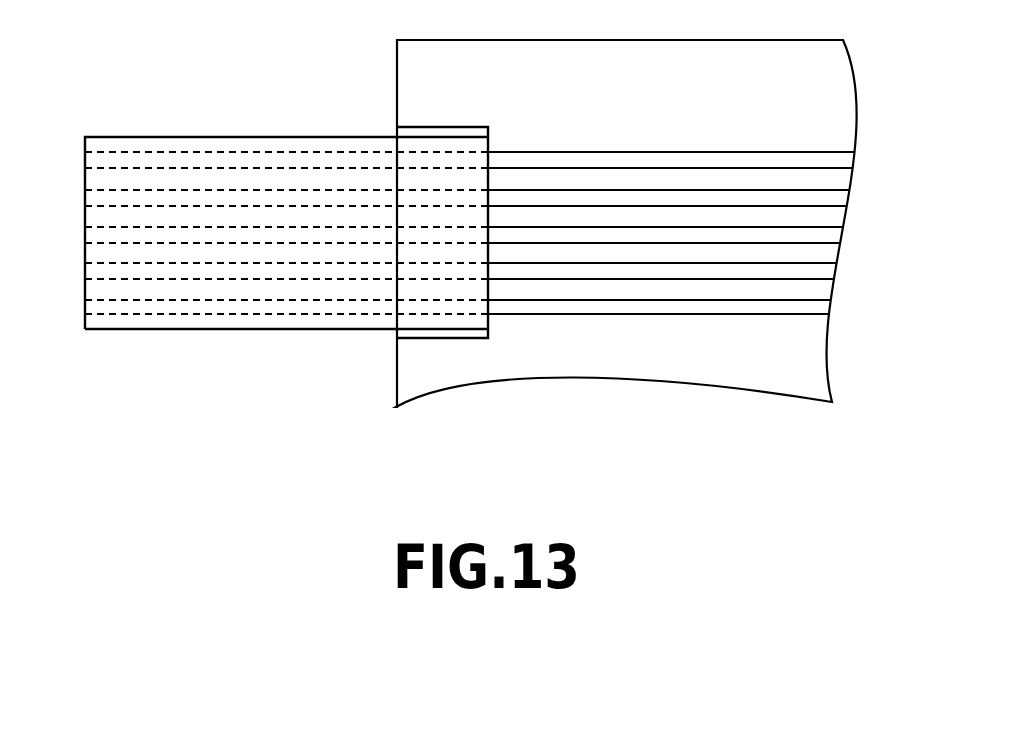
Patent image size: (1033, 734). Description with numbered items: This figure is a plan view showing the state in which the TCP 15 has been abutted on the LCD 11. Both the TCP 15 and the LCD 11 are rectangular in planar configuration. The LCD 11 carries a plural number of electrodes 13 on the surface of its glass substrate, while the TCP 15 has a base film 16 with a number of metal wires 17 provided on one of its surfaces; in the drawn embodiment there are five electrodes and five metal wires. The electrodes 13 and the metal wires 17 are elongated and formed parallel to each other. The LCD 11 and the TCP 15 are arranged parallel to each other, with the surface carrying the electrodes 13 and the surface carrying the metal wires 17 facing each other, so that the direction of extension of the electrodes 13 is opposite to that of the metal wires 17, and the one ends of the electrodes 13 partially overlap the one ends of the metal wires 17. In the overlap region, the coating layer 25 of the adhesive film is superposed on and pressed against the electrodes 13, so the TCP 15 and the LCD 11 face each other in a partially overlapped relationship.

The LCD 11 is at (827, 63).
The electrodes 13 is at (840, 160).
The TCP 15 is at (107, 332).
The base film 16 is at (187, 322).
The metal wires 17 is at (155, 152).
The coating layer 25 is at (397, 130).